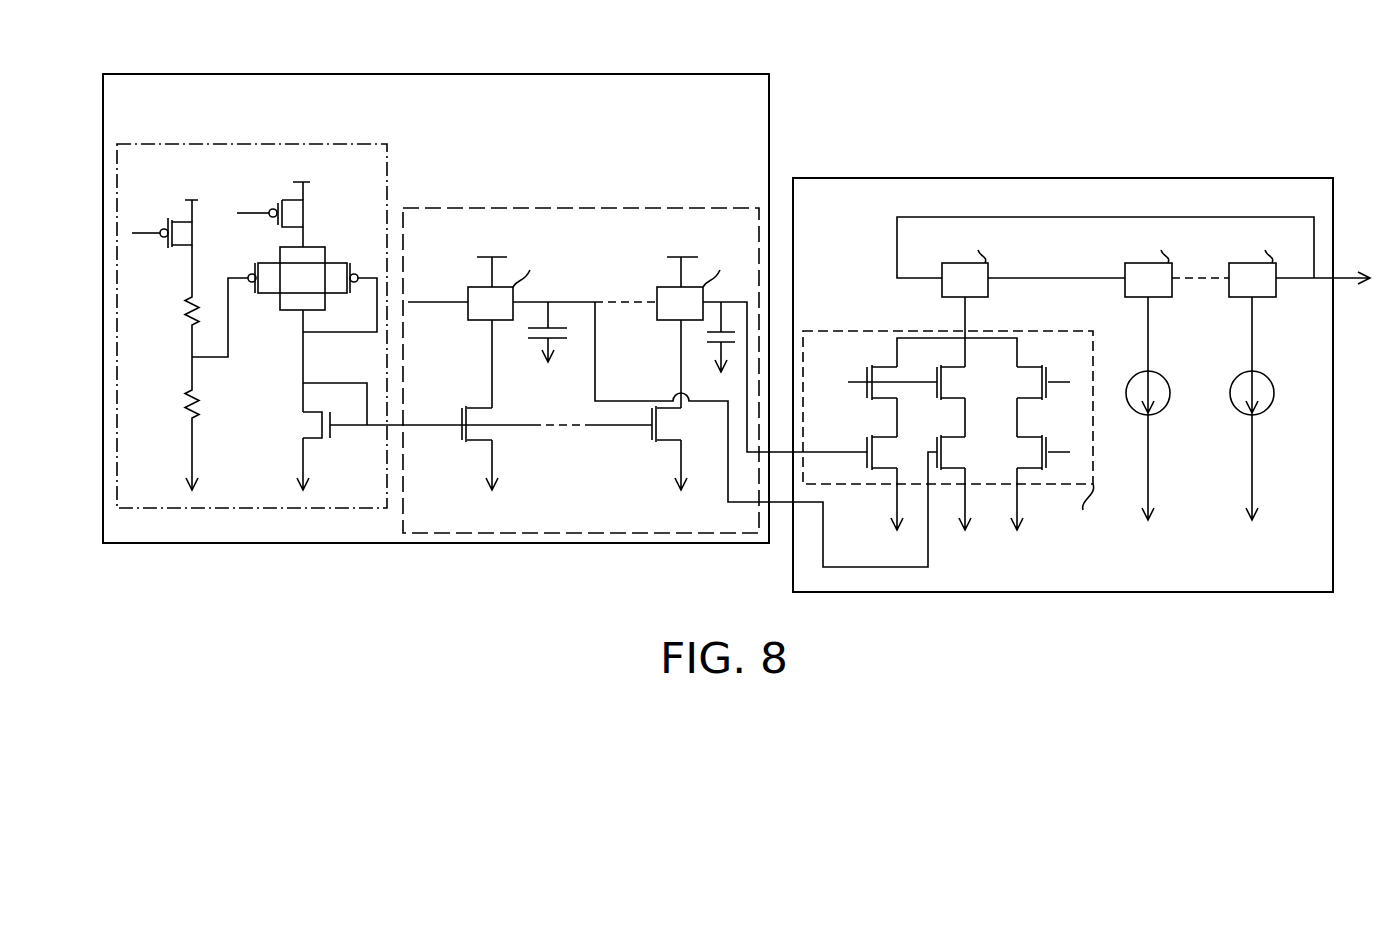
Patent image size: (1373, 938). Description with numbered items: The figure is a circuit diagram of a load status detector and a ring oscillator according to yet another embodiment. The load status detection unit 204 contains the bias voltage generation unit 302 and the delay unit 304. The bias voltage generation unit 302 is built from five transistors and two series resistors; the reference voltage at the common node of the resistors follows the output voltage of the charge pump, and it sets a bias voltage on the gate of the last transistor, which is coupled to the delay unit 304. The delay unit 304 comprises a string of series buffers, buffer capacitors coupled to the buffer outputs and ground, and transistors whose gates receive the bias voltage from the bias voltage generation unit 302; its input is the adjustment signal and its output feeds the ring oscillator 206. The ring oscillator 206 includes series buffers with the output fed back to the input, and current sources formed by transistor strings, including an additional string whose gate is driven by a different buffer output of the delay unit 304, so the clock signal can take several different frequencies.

The load status detection unit 204 is at (583, 74).
The bias voltage generation unit 302 is at (363, 144).
The delay unit 304 is at (673, 207).
The ring oscillator 206 is at (1017, 178).